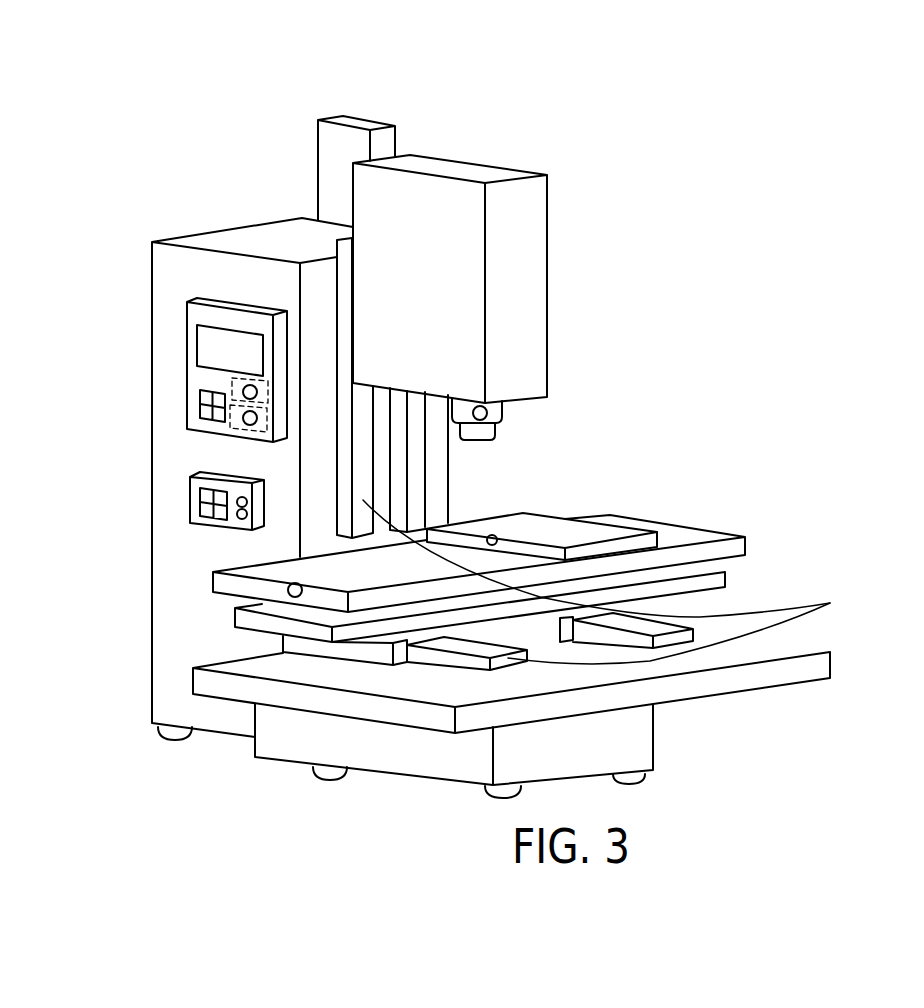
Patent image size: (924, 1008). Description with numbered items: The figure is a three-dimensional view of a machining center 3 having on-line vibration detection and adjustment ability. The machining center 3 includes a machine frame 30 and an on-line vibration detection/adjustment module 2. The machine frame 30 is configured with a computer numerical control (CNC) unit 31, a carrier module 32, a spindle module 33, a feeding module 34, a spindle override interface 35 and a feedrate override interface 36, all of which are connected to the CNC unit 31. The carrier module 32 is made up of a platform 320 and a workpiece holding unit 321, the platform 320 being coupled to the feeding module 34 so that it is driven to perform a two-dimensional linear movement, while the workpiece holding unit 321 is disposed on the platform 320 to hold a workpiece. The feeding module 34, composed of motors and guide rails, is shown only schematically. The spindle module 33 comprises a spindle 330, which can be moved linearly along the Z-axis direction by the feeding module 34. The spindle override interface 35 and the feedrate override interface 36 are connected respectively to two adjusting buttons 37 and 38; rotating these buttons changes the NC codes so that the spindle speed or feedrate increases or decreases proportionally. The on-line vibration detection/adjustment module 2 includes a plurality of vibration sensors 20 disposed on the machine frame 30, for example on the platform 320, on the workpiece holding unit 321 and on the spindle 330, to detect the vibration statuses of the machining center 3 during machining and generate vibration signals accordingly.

The machining center 3 is at (157, 174).
The machine frame 30 is at (233, 233).
The computer numerical control (CNC) unit 31 is at (216, 378).
The spindle override interface 35 is at (232, 386).
The feedrate override interface 36 is at (253, 432).
The adjusting button 37 is at (262, 391).
The adjusting button 38 is at (262, 418).
The on-line vibration detection/adjustment module 2 is at (188, 470).
The vibration sensor 20 is at (480, 420).
The spindle module 33 is at (460, 170).
The spindle 330 is at (502, 416).
The carrier module 32 is at (548, 499).
The workpiece holding unit 321 is at (620, 527).
The platform 320 is at (740, 548).
The feeding module 34 is at (610, 582).